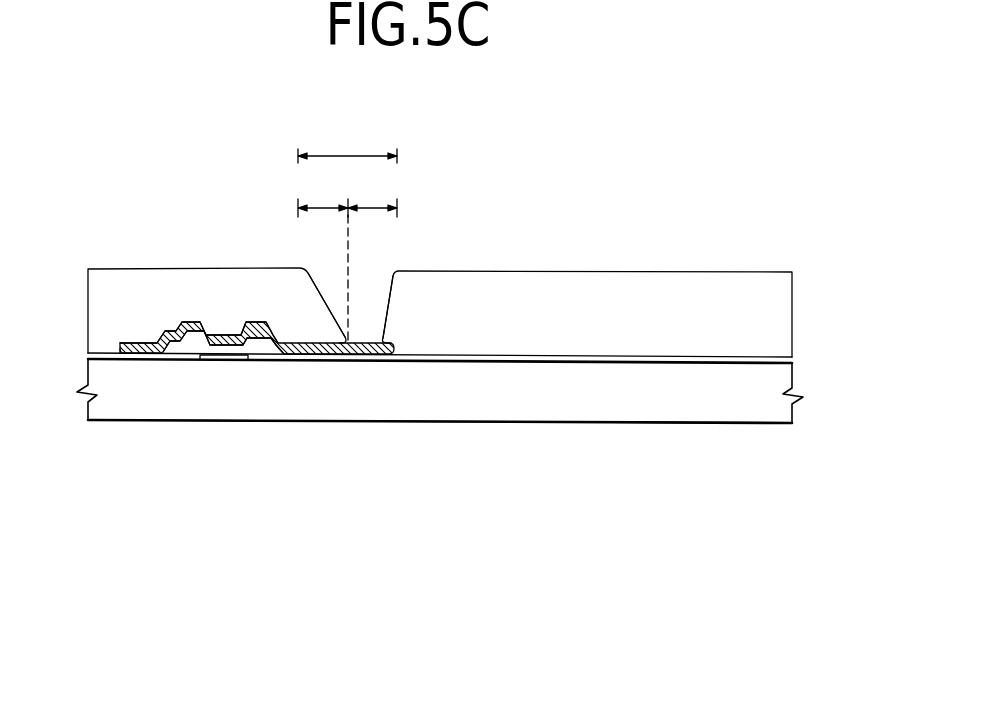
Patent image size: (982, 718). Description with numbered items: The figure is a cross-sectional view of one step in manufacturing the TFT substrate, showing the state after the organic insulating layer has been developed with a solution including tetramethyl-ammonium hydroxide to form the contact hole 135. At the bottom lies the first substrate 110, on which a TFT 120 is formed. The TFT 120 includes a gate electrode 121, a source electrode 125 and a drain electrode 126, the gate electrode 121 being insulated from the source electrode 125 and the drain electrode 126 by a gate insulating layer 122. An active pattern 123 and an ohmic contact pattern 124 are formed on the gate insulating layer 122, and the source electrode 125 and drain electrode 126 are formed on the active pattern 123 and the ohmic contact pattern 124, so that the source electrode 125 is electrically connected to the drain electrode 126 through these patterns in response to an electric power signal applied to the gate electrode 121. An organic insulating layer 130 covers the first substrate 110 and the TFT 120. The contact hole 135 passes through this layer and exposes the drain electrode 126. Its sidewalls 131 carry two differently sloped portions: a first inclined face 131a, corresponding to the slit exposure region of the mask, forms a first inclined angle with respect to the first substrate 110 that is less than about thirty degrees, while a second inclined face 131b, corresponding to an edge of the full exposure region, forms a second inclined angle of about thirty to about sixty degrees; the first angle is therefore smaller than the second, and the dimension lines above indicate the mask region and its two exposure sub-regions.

The first substrate 110 is at (686, 395).
The TFT 120 is at (244, 419).
The gate electrode 121 is at (232, 359).
The gate insulating layer 122 is at (186, 347).
The active pattern 123 is at (171, 357).
The ohmic contact pattern 124 is at (286, 397).
The source electrode 125 is at (123, 357).
The drain electrode 126 is at (366, 352).
The organic insulating layer 130 is at (575, 345).
The sidewalls 131 is at (378, 312).
The first inclined face 131a is at (317, 293).
The second inclined face 131b is at (391, 289).
The contact hole 135 is at (377, 267).